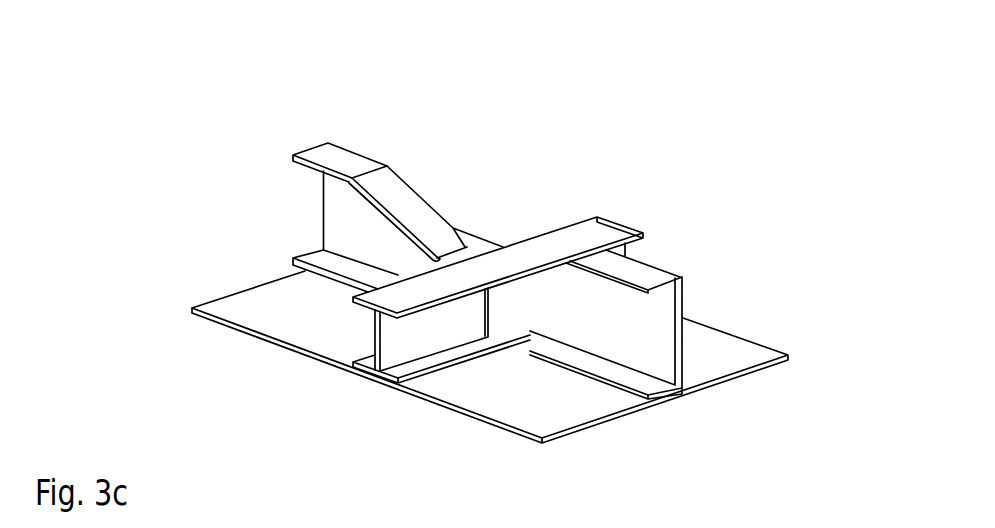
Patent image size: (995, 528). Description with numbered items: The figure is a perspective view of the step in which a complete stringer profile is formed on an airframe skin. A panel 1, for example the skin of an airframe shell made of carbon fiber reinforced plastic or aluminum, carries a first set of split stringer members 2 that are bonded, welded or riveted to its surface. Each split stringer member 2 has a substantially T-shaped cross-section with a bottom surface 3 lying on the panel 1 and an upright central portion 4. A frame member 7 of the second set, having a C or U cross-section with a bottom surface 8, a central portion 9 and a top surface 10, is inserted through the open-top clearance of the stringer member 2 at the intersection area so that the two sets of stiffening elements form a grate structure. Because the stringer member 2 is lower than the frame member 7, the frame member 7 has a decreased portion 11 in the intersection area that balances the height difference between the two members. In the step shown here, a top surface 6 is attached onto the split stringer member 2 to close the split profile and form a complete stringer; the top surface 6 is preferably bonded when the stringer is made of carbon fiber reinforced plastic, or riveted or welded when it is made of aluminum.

The panel 1 is at (728, 358).
The split stringer member 2 is at (643, 247).
The bottom surface 3 is at (413, 368).
The central portion 4 is at (393, 336).
The top surface 6 is at (603, 230).
The frame member 7 is at (703, 275).
The bottom surface 8 is at (318, 258).
The web of profile 9 is at (335, 217).
The top surface 10 is at (330, 157).
The decreased portion 11 is at (510, 292).